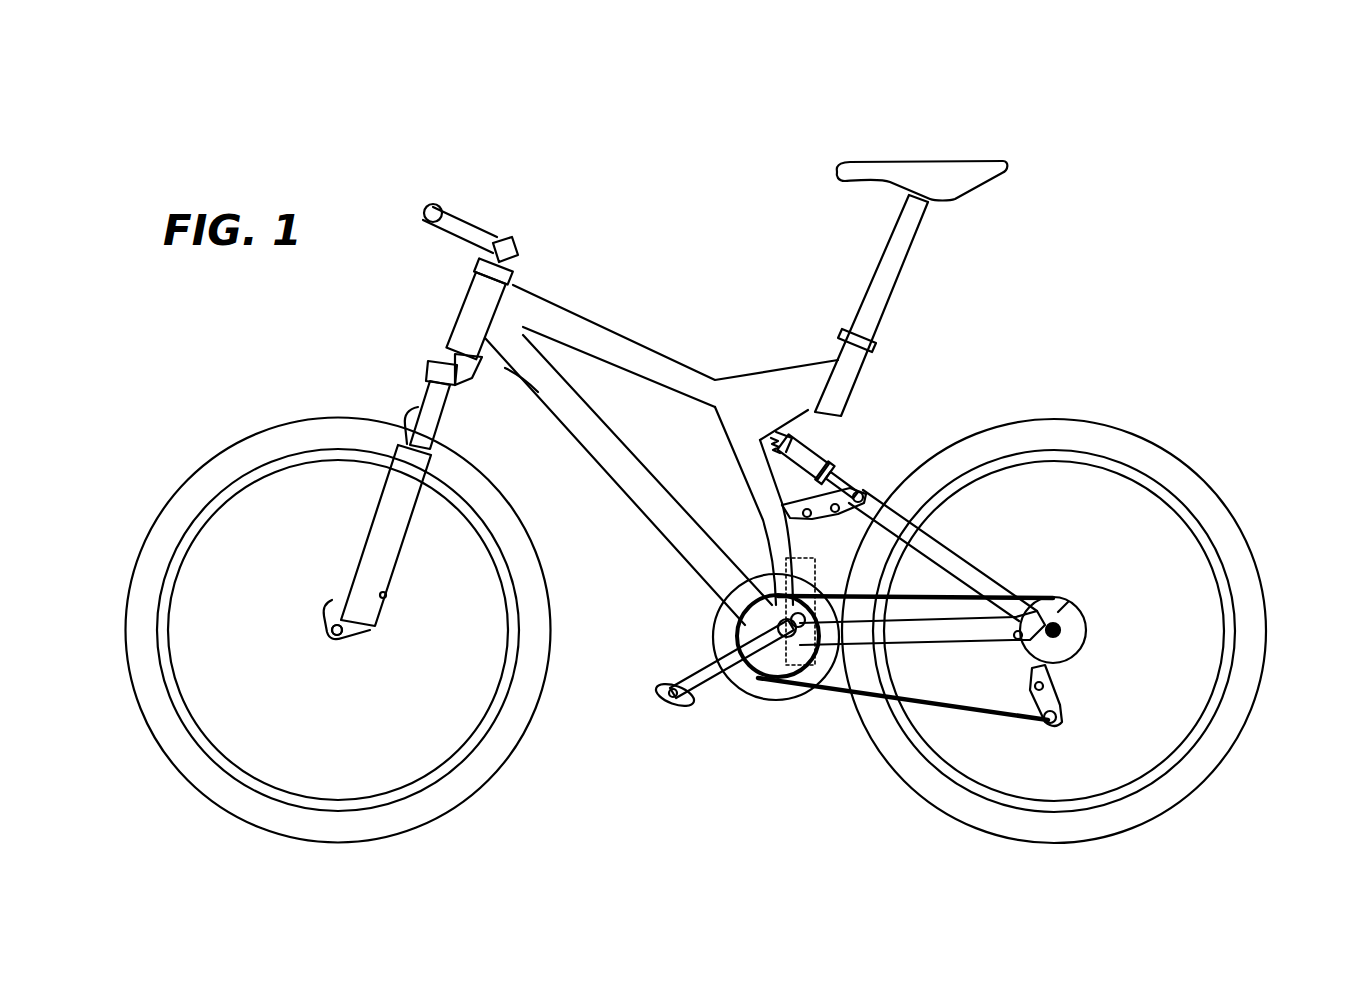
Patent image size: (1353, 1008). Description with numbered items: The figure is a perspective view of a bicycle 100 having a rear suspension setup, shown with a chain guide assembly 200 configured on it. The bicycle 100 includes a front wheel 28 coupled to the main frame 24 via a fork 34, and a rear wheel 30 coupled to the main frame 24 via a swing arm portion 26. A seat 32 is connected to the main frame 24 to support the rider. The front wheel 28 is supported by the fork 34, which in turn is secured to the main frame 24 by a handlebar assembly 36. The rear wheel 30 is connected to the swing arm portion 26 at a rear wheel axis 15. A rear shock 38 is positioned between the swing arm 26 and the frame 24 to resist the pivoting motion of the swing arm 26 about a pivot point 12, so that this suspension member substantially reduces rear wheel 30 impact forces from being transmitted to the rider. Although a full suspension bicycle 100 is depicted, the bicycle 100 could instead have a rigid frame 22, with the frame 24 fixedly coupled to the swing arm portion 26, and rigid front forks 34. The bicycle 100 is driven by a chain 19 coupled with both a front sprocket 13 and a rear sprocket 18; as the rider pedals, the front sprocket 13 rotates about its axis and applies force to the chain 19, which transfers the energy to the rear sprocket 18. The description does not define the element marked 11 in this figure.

The bicycle 100 is at (728, 110).
The rigid frame 22 is at (1090, 280).
The main frame 24 is at (637, 340).
The swing arm portion 26 is at (970, 432).
The front wheel 28 is at (240, 432).
The rear wheel 30 is at (1215, 500).
The seat 32 is at (937, 158).
The fork 34 is at (357, 571).
The handlebar assembly 36 is at (438, 202).
The rear shock 38 is at (822, 470).
The crank arm 11 is at (705, 668).
The pivot point 12 is at (778, 637).
The front sprocket 13 is at (712, 628).
The rear wheel axis 15 is at (1071, 647).
The rear sprocket 18 is at (1043, 668).
The chain 19 is at (840, 700).
The chain guide assembly 200 is at (803, 660).